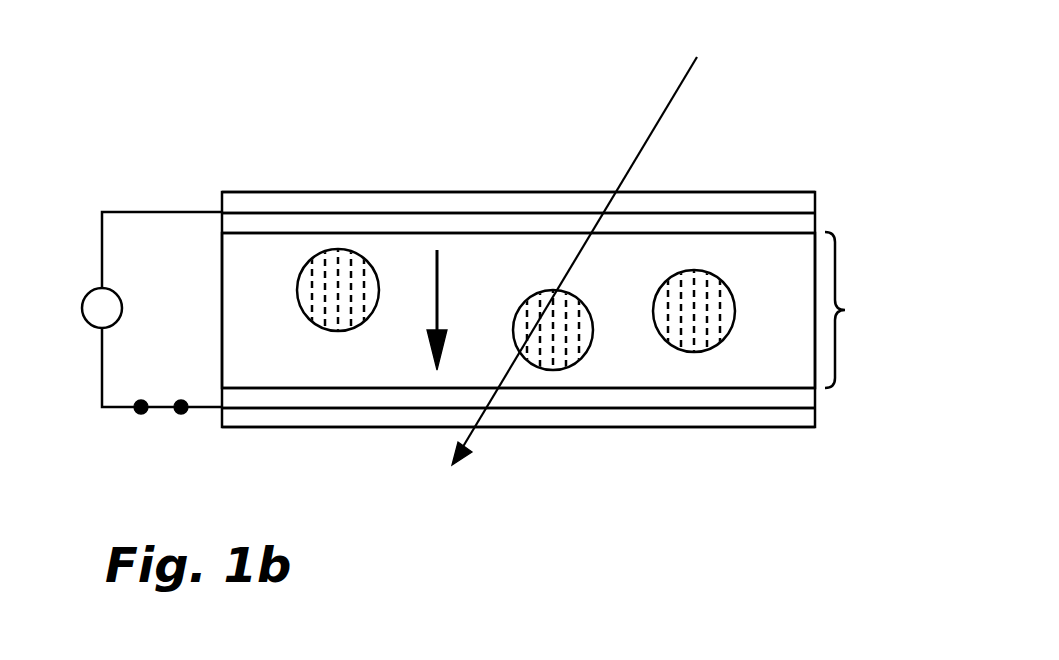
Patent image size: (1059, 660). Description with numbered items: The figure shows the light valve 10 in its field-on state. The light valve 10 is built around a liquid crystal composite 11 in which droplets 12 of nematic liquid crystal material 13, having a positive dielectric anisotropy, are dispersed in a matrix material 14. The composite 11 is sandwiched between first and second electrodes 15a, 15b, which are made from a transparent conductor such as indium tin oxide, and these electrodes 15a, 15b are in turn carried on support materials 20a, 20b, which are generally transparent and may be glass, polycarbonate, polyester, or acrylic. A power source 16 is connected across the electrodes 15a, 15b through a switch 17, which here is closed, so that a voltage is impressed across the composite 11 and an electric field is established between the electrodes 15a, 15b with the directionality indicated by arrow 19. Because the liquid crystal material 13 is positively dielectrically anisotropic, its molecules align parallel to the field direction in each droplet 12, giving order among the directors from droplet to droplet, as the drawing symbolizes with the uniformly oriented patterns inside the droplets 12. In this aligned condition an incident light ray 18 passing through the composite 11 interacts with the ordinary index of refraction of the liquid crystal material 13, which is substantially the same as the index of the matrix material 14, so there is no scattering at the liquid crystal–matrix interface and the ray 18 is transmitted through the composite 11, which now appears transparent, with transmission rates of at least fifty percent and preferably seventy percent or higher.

The light valve 10 is at (207, 150).
The liquid crystal composite 11 is at (864, 310).
The droplets 12 is at (708, 350).
The nematic liquid crystal material 13 is at (335, 312).
The matrix material 14 is at (647, 357).
The first electrode 15a is at (785, 398).
The second electrode 15b is at (781, 222).
The power source 16 is at (80, 307).
The switch 17 is at (181, 414).
The incident light ray 18 is at (588, 251).
The arrow 19 is at (445, 275).
The support material 20a is at (256, 418).
The support material 20b is at (286, 200).